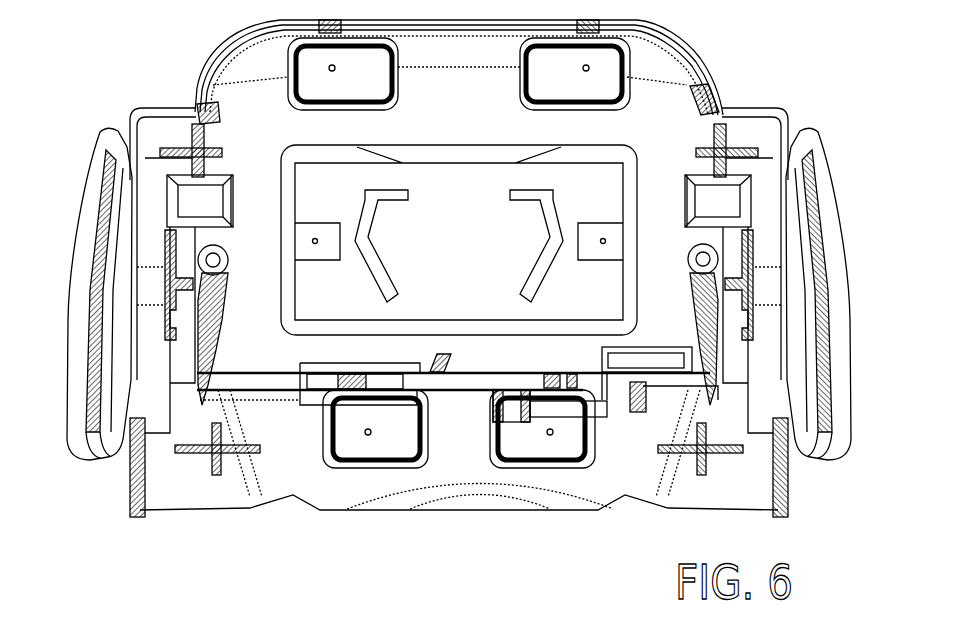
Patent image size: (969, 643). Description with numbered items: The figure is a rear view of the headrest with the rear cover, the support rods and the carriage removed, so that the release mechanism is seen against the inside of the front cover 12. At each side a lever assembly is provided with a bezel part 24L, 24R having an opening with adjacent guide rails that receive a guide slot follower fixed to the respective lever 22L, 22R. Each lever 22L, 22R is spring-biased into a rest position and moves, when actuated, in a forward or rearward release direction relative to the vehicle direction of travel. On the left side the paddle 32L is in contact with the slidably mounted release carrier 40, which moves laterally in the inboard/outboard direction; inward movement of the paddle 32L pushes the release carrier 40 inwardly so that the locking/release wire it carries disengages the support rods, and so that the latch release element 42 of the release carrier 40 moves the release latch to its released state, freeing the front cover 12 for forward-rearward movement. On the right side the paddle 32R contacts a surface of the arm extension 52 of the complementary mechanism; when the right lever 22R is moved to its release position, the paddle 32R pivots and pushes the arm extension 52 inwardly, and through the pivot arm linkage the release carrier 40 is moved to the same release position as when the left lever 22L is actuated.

The front cover 12 is at (711, 67).
The left bezel part 24L is at (127, 147).
The right bezel part 24R is at (822, 163).
The left lever 22L is at (103, 313).
The right lever 22R is at (817, 300).
The left paddle 32L is at (205, 363).
The right paddle 32R is at (695, 338).
The release carrier 40 is at (290, 383).
The latch release element 42 is at (438, 355).
The arm extension 52 is at (612, 412).